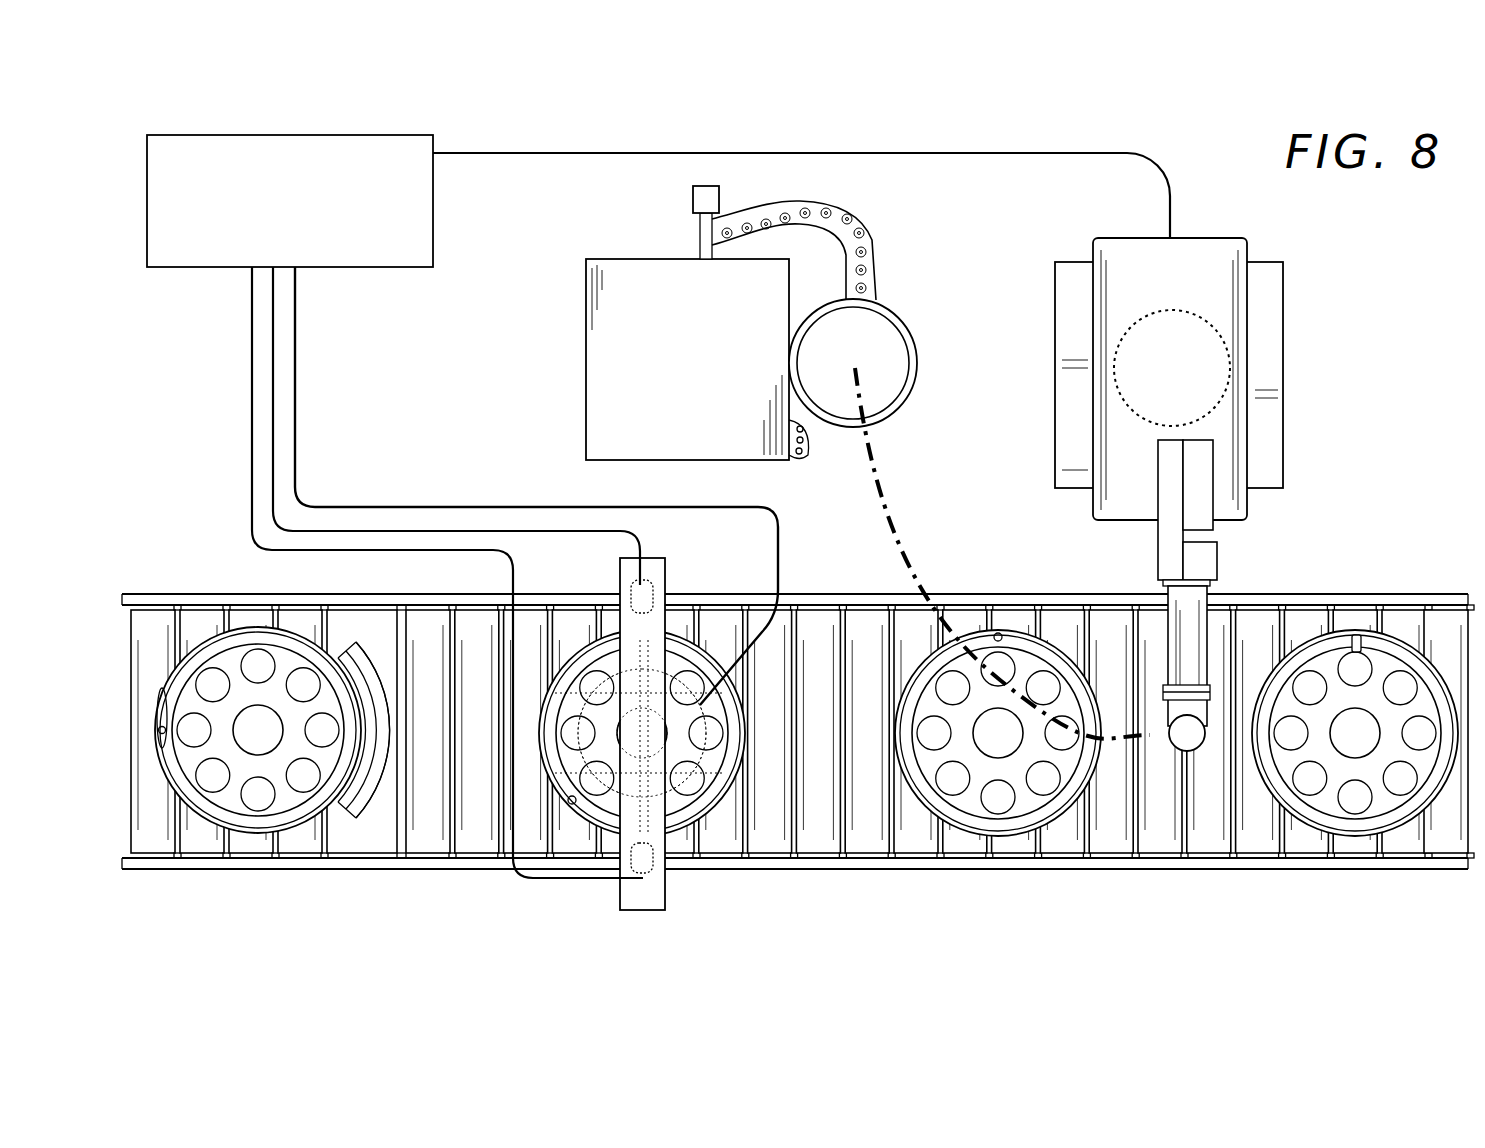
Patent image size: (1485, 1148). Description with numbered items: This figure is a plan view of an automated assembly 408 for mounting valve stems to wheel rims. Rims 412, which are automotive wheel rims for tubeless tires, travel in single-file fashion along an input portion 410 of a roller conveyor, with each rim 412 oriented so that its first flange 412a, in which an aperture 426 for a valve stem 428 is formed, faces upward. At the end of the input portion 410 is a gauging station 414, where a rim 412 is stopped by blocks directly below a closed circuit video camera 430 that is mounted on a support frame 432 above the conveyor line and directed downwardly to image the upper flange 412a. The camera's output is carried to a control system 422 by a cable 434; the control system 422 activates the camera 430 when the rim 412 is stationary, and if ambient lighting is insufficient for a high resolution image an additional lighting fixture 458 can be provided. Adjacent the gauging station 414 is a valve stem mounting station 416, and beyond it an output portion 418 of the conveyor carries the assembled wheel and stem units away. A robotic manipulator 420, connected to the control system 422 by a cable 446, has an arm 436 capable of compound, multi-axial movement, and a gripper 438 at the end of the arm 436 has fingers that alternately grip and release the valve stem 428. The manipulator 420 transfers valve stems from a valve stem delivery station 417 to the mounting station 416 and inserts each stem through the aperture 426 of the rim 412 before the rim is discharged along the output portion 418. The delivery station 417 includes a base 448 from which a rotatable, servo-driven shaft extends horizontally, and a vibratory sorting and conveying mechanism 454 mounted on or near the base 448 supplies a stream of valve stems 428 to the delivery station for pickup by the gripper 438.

The automated assembly 408 is at (831, 884).
The input portion of conveyor 410 is at (157, 820).
The rim 412 is at (386, 786).
The first flange 412a is at (353, 787).
The gauging station 414 is at (708, 838).
The valve stem mounting station 416 is at (1064, 828).
The output portion of conveyor 418 is at (1443, 814).
The valve stem delivery station 417 is at (578, 384).
The robotic manipulator 420 is at (1284, 336).
The control system 422 is at (306, 134).
The aperture 426 is at (166, 693).
The valve stem 428 is at (1363, 643).
The closed circuit video camera 430 is at (655, 590).
The support frame 432 is at (662, 558).
The cable 434 is at (525, 532).
The arm 436 is at (1217, 563).
The gripper 438 is at (1206, 731).
The cable 446 is at (927, 153).
The base 448 is at (633, 259).
The vibratory sorting and conveying mechanism 454 is at (915, 338).
The lighting fixture 458 is at (628, 862).